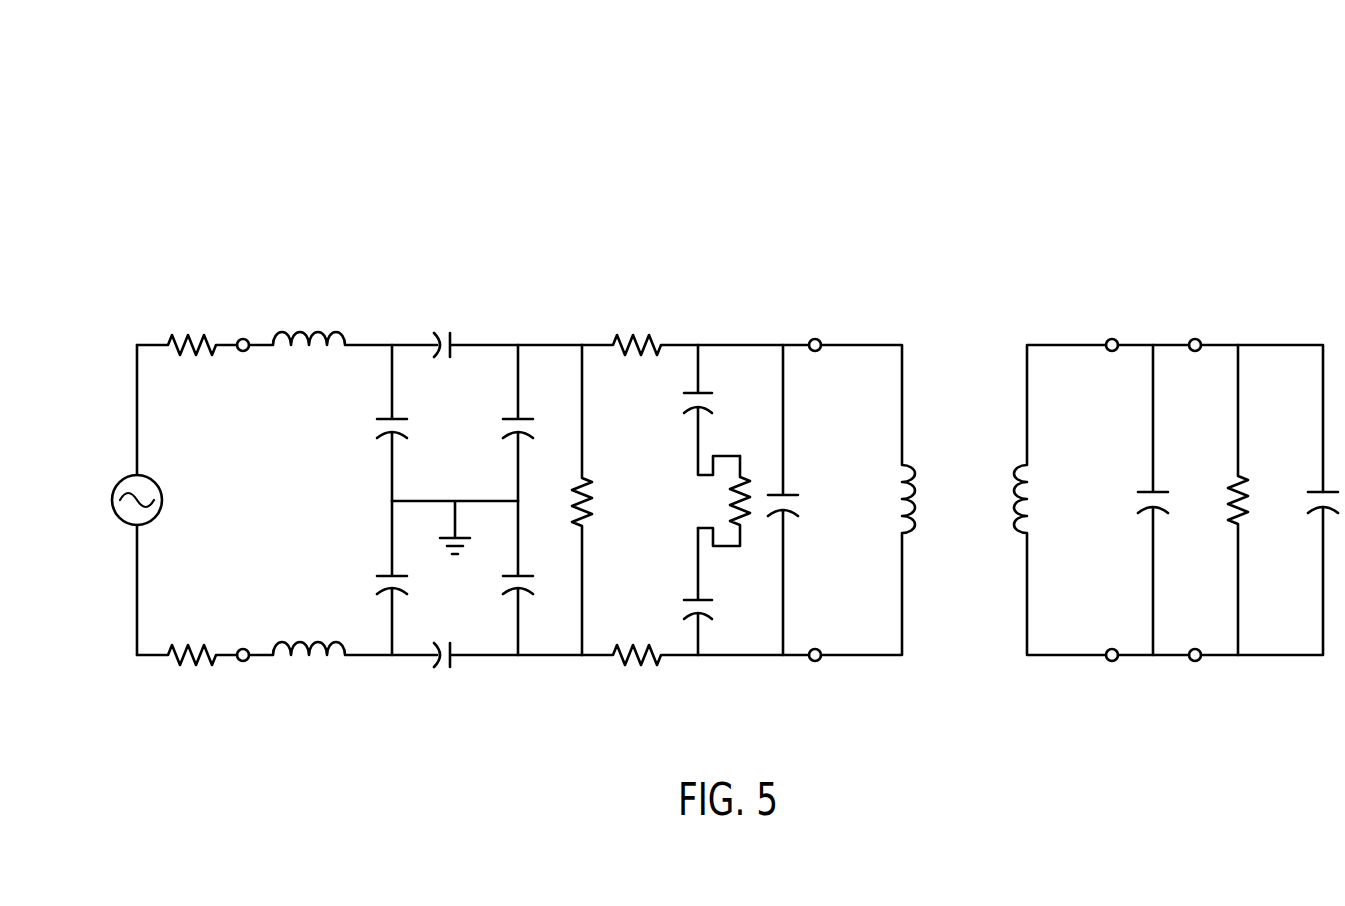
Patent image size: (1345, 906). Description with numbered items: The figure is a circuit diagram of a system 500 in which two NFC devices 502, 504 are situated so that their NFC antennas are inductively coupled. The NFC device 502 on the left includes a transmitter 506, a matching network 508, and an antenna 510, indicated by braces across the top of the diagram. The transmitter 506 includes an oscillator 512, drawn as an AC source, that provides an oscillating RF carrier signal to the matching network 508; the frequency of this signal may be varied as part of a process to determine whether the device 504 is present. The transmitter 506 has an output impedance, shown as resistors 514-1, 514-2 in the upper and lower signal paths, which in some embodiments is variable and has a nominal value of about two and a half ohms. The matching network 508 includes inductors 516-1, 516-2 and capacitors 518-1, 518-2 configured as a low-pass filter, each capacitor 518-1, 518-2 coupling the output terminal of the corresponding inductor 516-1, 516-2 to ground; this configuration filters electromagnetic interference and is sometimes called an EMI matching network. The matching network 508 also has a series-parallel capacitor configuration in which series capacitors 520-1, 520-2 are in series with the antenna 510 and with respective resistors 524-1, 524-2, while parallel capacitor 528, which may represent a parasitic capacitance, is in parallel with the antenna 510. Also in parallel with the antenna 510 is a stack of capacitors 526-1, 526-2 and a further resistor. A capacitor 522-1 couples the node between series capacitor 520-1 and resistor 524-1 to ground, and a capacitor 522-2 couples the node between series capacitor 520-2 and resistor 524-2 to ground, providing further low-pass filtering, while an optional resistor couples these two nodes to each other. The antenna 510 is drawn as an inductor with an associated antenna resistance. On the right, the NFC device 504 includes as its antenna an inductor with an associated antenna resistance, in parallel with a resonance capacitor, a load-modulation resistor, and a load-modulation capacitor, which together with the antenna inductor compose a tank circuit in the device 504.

The system 500 is at (795, 50).
The NFC device 502 is at (522, 142).
The NFC device 504 is at (1152, 205).
The transmitter 506 is at (247, 247).
The matching network 508 is at (808, 247).
The antenna 510 is at (920, 247).
The oscillator 512 is at (150, 478).
The resistor 514-1 is at (187, 313).
The resistor 514-2 is at (187, 688).
The inductor 516-1 is at (343, 308).
The inductor 516-2 is at (343, 687).
The capacitor 518-1 is at (361, 423).
The capacitor 518-2 is at (361, 578).
The capacitor 520-1 is at (500, 314).
The capacitor 520-2 is at (500, 687).
The capacitor 522-1 is at (490, 423).
The capacitor 522-2 is at (490, 578).
The resistor 524-1 is at (695, 313).
The resistor 524-2 is at (695, 689).
The capacitor 526-1 is at (681, 410).
The capacitor 526-2 is at (667, 591).
The capacitor 528 is at (802, 500).